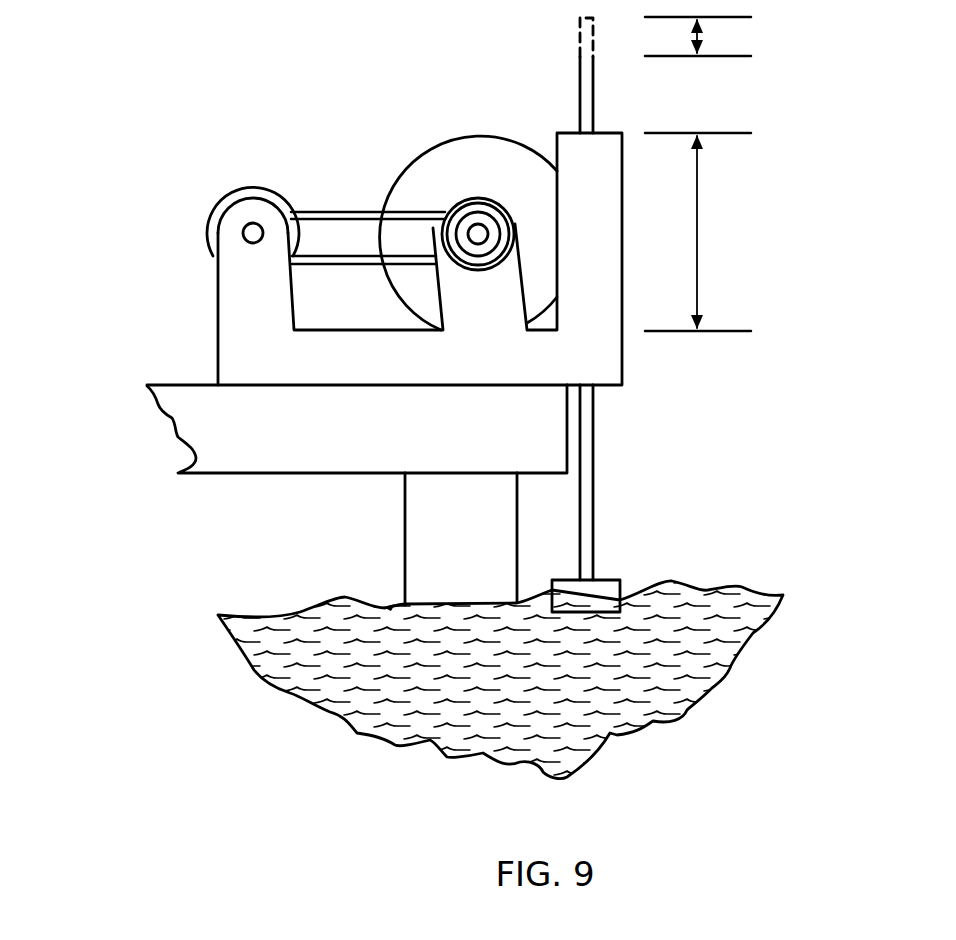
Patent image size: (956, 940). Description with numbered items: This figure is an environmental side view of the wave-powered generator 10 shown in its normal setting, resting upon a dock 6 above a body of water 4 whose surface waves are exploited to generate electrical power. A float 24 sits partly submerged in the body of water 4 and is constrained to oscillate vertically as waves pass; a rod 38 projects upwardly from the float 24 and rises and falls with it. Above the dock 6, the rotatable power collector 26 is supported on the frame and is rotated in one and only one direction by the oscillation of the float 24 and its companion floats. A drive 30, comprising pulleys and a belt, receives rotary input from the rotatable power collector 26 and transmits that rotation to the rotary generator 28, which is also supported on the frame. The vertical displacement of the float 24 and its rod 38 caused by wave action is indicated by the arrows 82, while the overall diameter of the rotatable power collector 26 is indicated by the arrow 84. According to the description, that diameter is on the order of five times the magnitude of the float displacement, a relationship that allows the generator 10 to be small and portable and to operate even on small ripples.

The generator 10 is at (392, 98).
The rotatable power collector 26 is at (443, 137).
The rotary generator 28 is at (223, 193).
The drive 30 is at (365, 193).
The rod 38 is at (594, 413).
The float 24 is at (603, 578).
The body of water 4 is at (372, 575).
The dock 6 is at (233, 537).
The arrows 82 is at (700, 40).
The arrow 84 is at (698, 203).